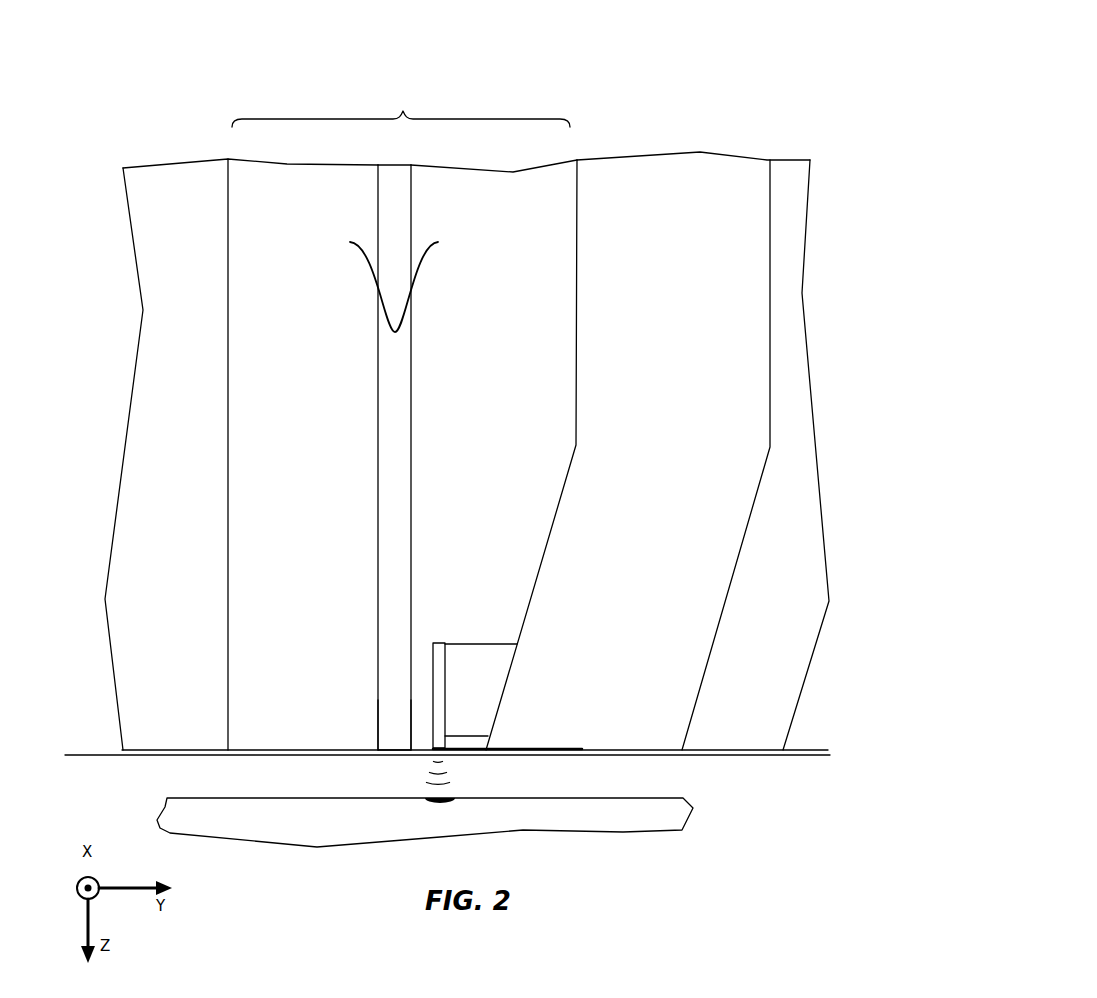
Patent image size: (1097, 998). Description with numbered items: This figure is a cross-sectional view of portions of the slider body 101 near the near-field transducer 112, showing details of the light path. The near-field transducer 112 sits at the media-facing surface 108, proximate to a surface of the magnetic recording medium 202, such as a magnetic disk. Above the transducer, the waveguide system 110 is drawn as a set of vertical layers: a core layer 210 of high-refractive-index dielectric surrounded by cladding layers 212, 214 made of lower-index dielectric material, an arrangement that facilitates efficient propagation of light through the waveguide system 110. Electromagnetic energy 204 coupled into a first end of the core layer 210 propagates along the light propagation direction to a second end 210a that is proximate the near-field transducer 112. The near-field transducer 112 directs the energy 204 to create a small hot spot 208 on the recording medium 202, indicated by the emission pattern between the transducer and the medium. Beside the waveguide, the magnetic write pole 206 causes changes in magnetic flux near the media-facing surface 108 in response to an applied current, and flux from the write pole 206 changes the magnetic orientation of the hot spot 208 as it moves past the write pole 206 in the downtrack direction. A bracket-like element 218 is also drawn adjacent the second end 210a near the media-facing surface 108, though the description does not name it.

The slider body 101 is at (700, 82).
The waveguide system 110 is at (401, 106).
The cladding layer 214 is at (250, 157).
The core layer 210 is at (400, 164).
The second end 210a is at (380, 698).
The electromagnetic energy 204 is at (367, 253).
The cladding layer 212 is at (438, 176).
The magnetic write pole 206 is at (688, 152).
The holder bracket 218 is at (473, 650).
The near-field transducer 112 is at (437, 728).
The media-facing surface 108 is at (733, 757).
The magnetic recording medium 202 is at (218, 818).
The hot spot 208 is at (440, 803).